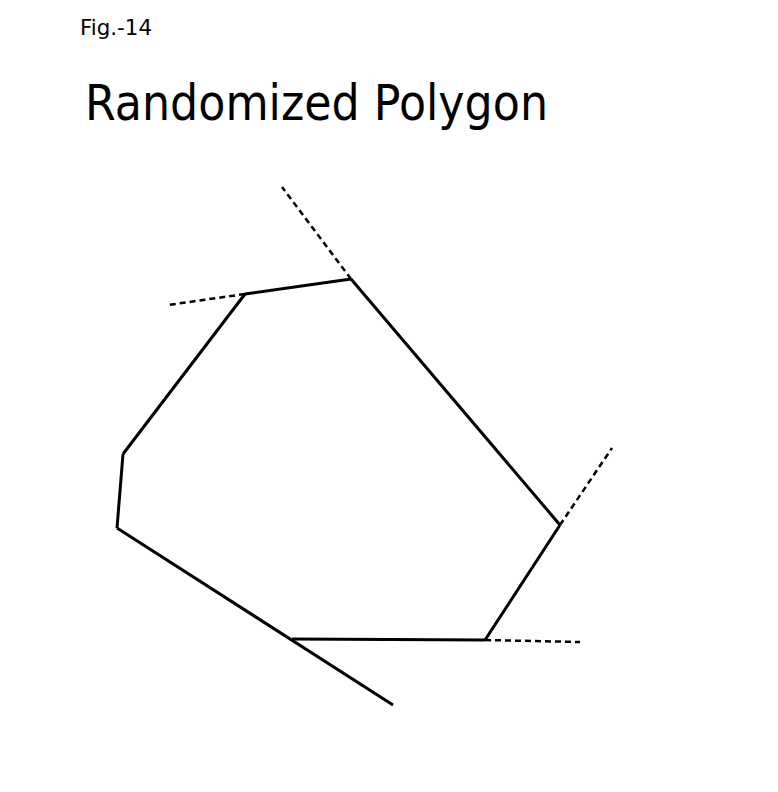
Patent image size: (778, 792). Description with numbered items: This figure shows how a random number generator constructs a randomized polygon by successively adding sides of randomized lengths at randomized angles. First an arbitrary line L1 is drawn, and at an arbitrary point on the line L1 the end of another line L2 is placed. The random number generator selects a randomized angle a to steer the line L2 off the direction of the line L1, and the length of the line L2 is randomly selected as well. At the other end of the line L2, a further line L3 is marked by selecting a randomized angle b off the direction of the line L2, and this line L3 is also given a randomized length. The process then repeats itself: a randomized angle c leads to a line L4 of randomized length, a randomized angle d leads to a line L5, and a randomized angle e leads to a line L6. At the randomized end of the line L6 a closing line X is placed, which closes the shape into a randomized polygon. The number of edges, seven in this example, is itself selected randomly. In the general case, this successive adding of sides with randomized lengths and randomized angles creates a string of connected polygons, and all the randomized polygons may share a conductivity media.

The arbitrary line L1 is at (255, 616).
The second line L2 is at (388, 627).
The third line L3 is at (522, 571).
The fourth line L4 is at (455, 402).
The fifth line L5 is at (298, 310).
The sixth line L6 is at (176, 374).
The closing line X is at (102, 491).
The randomized angle a is at (484, 659).
The randomized angle b is at (539, 597).
The randomized angle c is at (582, 481).
The randomized angle d is at (311, 233).
The randomized angle e is at (206, 320).